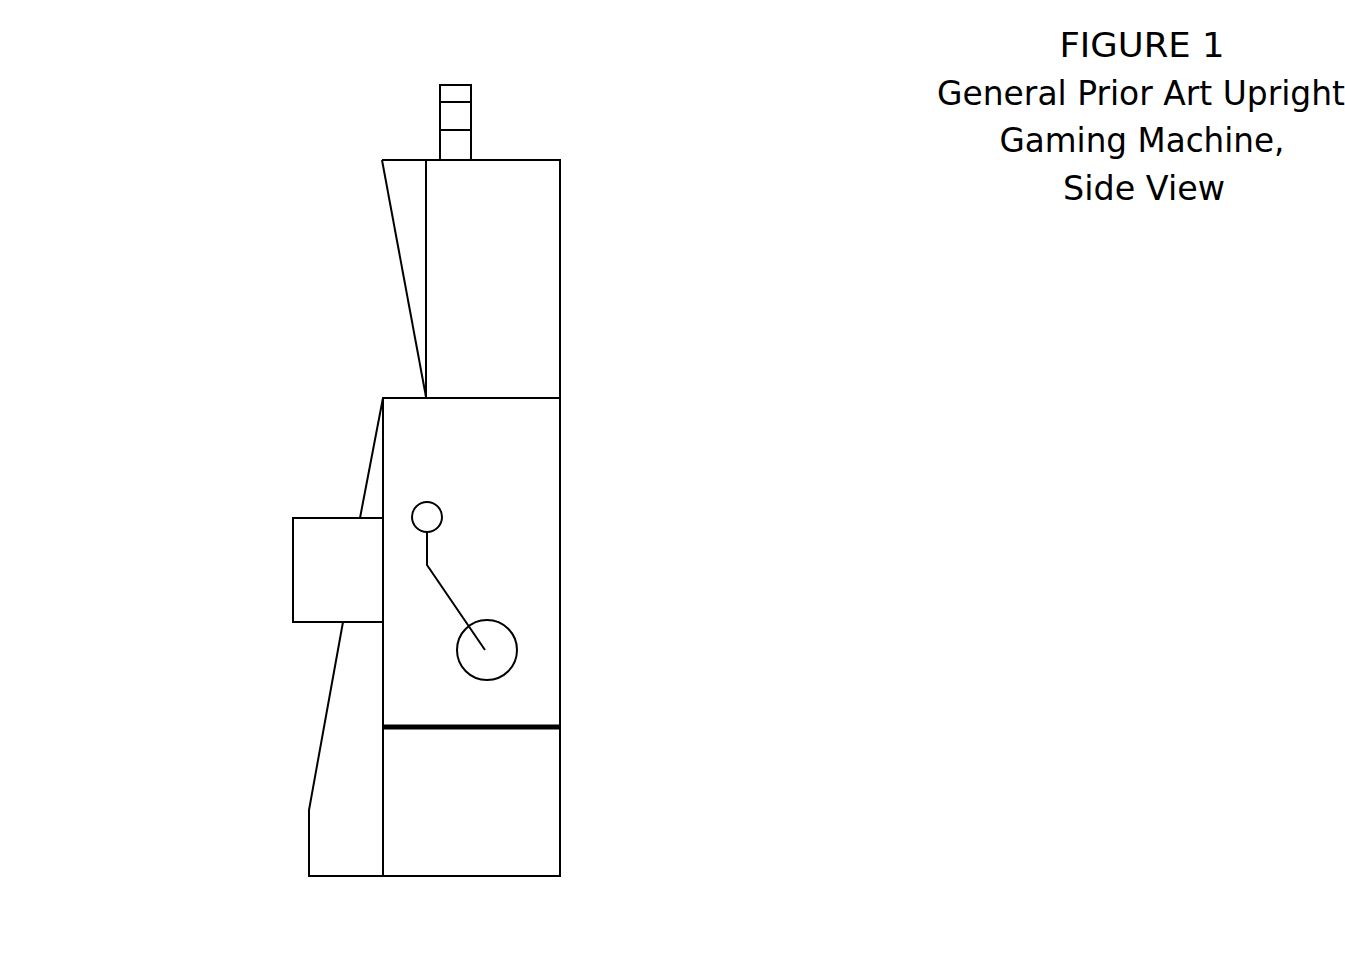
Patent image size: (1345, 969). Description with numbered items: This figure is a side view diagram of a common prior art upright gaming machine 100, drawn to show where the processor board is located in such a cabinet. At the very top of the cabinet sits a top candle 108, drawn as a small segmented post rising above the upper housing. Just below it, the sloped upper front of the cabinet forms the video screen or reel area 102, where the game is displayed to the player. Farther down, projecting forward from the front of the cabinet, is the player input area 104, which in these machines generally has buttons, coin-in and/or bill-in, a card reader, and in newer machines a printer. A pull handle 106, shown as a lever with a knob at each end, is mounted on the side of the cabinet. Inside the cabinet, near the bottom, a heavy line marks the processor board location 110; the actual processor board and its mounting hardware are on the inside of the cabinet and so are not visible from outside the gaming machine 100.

The gaming machine 100 is at (560, 327).
The video screen or reel area 102 is at (395, 280).
The player input area 104 is at (340, 497).
The pull handle 106 is at (443, 577).
The top candle 108 is at (438, 116).
The processor board location 110 is at (513, 727).